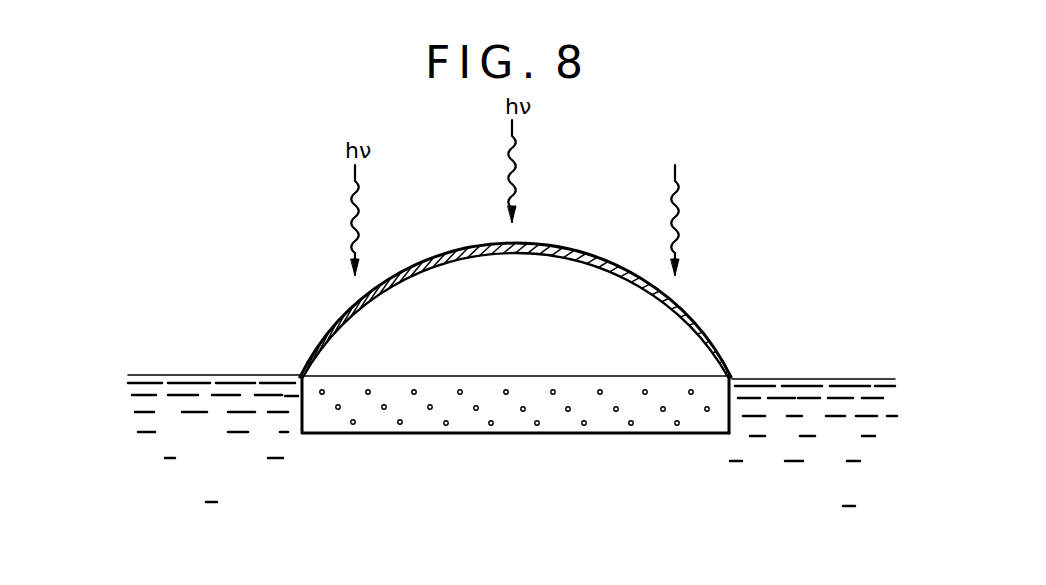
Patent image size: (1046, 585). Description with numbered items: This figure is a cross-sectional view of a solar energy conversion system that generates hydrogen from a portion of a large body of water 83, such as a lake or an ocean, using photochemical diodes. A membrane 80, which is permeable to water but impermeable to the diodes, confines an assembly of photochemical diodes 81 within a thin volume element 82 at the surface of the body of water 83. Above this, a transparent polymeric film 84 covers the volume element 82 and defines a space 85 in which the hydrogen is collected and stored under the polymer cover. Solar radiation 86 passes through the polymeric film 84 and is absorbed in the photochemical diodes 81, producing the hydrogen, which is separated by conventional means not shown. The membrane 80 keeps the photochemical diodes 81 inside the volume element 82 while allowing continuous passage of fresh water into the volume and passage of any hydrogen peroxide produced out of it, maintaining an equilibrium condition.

The membrane 80 is at (466, 434).
The photochemical diodes 81 is at (616, 411).
The thin volume element 82 is at (693, 423).
The body of water 83 is at (226, 464).
The transparent polymeric film 84 is at (323, 338).
The space 85 is at (660, 338).
The solar radiation 86 is at (680, 218).